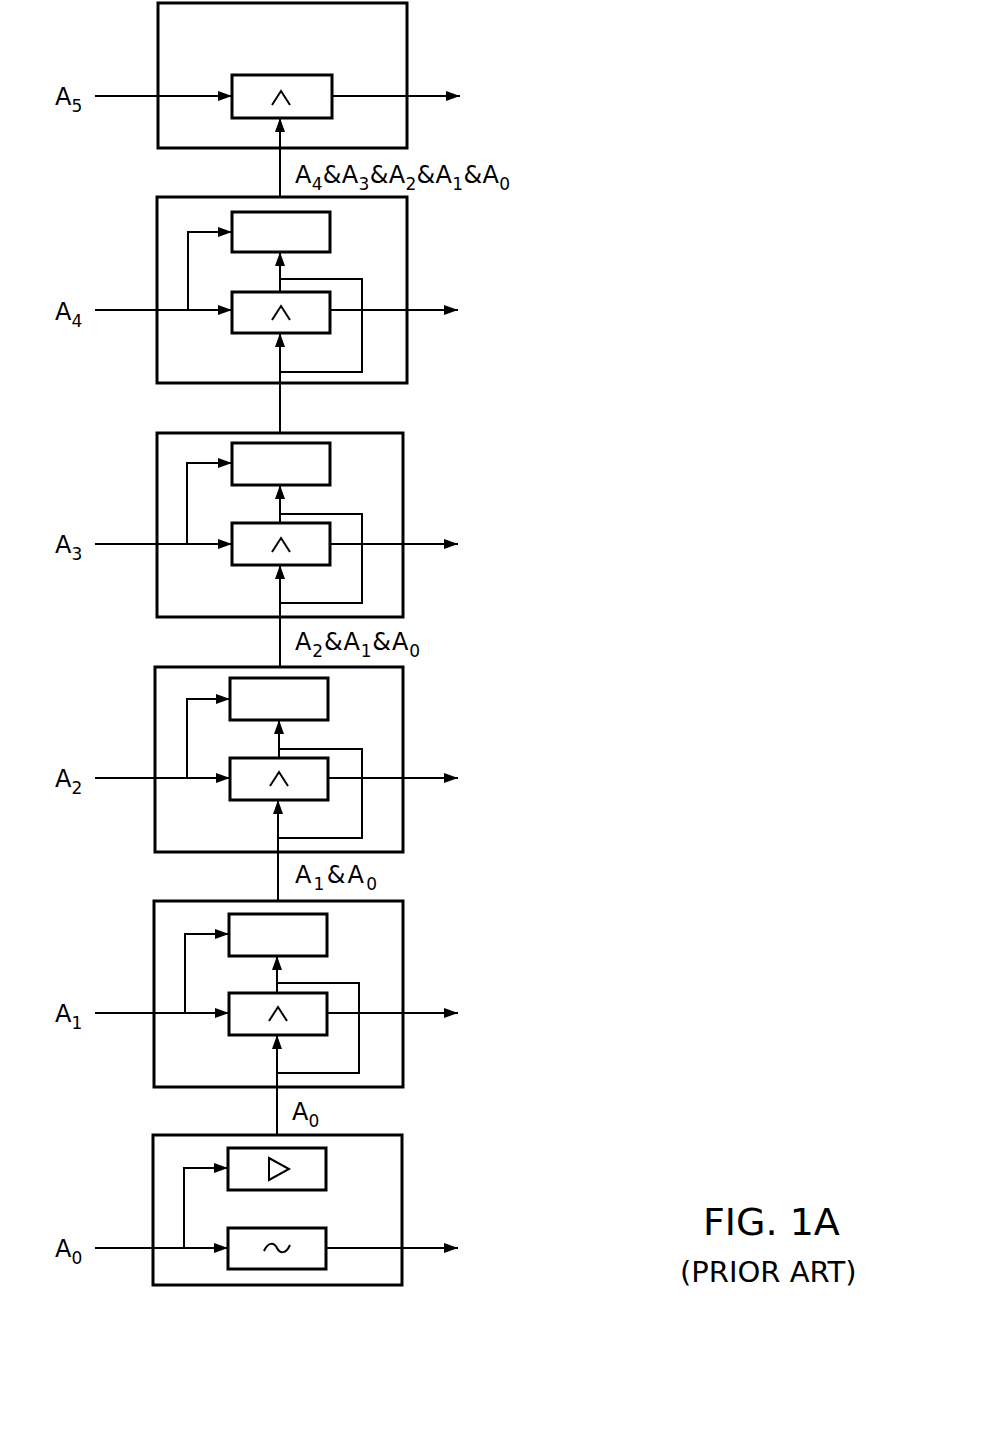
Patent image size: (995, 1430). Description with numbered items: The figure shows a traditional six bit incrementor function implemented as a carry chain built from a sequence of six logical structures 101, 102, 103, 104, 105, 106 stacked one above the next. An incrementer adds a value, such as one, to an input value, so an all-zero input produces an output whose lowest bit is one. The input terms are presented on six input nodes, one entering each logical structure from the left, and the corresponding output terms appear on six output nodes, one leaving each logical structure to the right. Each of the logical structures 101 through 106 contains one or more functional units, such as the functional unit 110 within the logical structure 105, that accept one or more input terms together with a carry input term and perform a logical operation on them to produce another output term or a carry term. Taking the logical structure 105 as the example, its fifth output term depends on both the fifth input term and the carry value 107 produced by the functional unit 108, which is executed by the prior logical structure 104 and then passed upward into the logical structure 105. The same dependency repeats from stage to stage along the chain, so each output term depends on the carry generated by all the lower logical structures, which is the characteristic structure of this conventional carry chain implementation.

The logical structure 101 is at (388, 1193).
The logical structure 102 is at (390, 960).
The logical structure 103 is at (392, 725).
The logical structure 104 is at (392, 490).
The logical structure 105 is at (392, 247).
The logical structure 106 is at (395, 40).
The carry value 107 is at (473, 405).
The functional unit 108 is at (313, 467).
The functional unit 110 is at (252, 333).